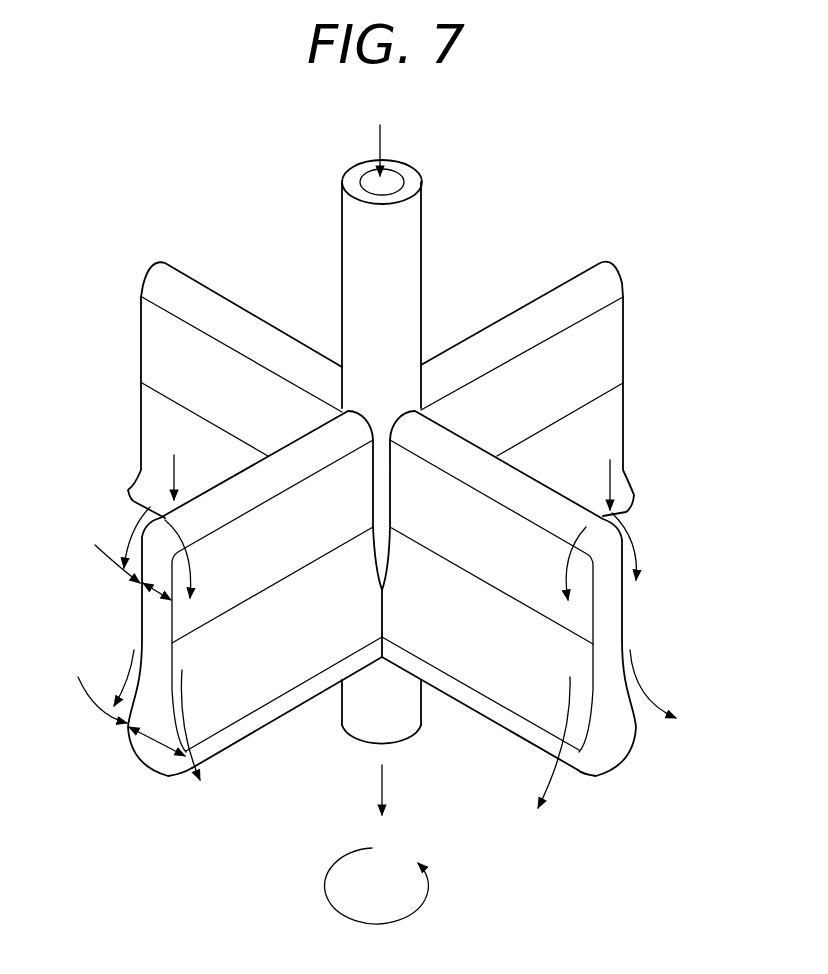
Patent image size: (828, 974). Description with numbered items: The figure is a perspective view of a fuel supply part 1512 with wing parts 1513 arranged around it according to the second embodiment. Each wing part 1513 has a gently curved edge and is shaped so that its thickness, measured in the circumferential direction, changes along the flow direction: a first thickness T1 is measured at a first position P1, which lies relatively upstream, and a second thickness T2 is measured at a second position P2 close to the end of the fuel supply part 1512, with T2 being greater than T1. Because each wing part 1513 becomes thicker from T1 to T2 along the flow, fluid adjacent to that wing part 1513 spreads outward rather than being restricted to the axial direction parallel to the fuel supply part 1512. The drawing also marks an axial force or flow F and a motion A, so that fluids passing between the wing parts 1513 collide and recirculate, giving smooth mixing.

The fuel supply part 1512 is at (402, 233).
The wing part 1513 is at (490, 465).
The axial force F is at (387, 468).
The rotational motion A is at (395, 691).
The first position P1 is at (102, 551).
The second position P2 is at (96, 686).
The first thickness T1 is at (157, 579).
The second thickness T2 is at (157, 735).